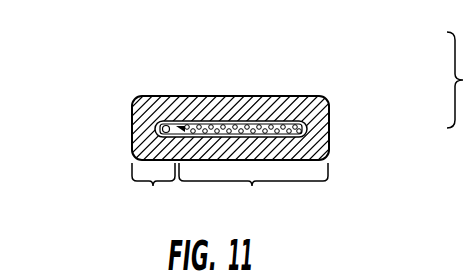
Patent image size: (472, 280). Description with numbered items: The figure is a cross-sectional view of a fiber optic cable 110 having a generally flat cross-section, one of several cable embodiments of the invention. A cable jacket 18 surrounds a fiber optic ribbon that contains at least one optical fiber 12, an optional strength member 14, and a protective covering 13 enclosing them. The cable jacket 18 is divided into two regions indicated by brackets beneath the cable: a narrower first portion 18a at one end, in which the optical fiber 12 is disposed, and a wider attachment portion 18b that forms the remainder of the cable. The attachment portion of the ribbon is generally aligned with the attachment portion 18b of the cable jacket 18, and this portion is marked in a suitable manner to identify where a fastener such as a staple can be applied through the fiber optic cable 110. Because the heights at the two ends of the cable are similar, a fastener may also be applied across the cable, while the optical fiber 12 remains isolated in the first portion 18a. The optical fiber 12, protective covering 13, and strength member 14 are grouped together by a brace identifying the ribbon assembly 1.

The fiber optic cable 110 is at (251, 106).
The optical fiber 12 is at (168, 127).
The protective covering 13 is at (183, 119).
The strength member 14 is at (293, 120).
The cable jacket 18 is at (327, 145).
The first portion 18a is at (153, 192).
The attachment portion 18b is at (253, 192).
The assembly 1 is at (459, 80).